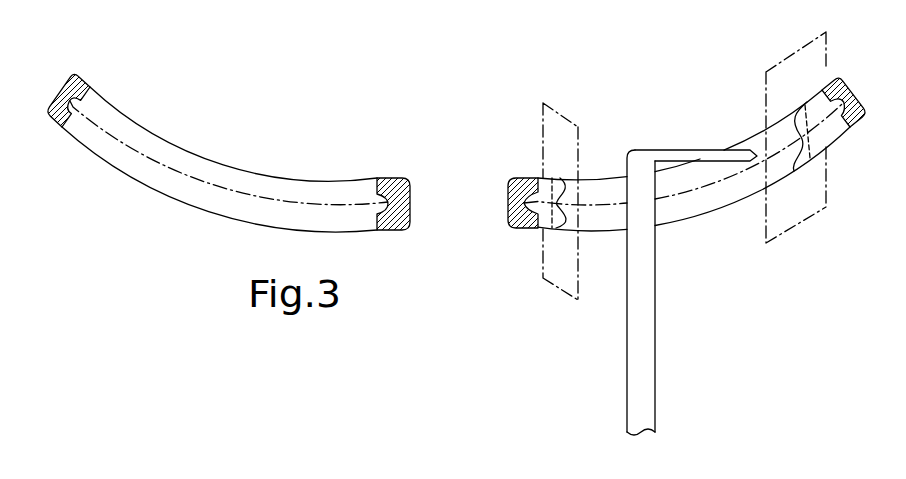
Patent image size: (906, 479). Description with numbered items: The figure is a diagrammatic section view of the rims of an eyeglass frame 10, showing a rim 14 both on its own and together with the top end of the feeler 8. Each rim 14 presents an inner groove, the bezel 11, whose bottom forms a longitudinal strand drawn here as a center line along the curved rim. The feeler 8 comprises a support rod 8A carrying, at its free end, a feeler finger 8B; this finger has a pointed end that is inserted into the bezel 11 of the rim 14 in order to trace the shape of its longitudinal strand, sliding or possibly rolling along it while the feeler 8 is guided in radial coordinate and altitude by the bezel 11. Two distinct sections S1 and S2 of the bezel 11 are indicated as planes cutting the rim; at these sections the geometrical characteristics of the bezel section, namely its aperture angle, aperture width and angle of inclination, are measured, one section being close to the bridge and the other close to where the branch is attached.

The eyeglass frame 10 is at (386, 169).
The bezel 11 is at (193, 177).
The rim 14 is at (110, 164).
The feeler 8 is at (634, 262).
The support rod 8A is at (648, 383).
The feeler finger 8B is at (691, 149).
The section S1 is at (800, 112).
The section S2 is at (557, 180).